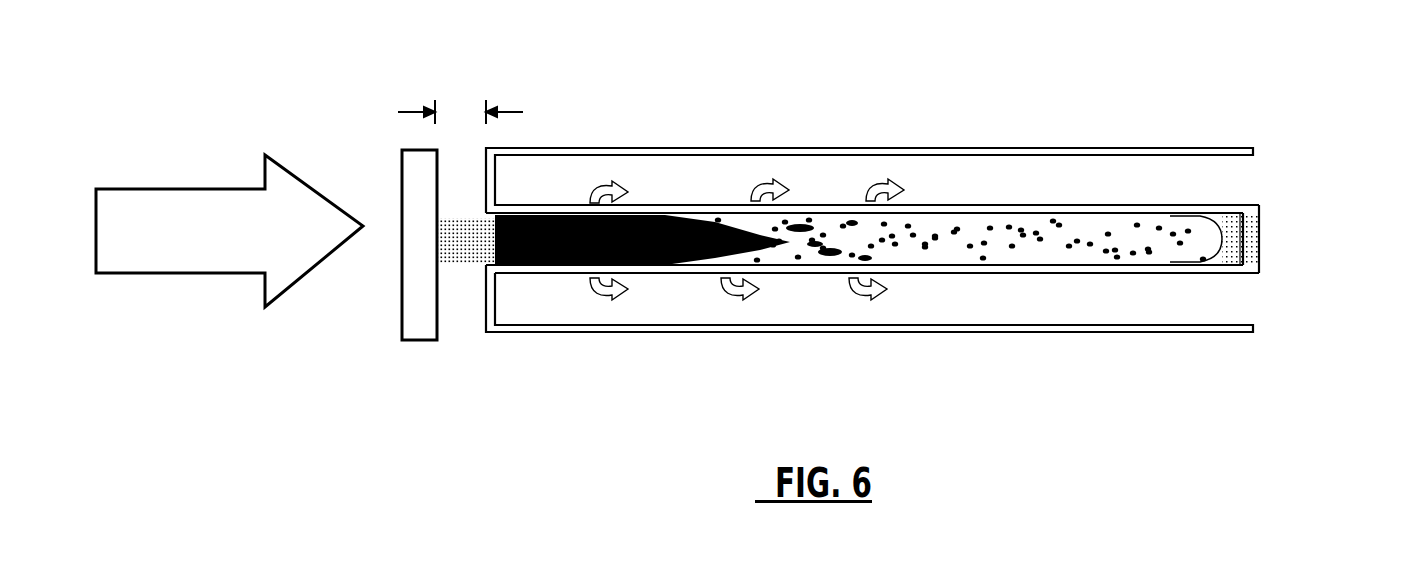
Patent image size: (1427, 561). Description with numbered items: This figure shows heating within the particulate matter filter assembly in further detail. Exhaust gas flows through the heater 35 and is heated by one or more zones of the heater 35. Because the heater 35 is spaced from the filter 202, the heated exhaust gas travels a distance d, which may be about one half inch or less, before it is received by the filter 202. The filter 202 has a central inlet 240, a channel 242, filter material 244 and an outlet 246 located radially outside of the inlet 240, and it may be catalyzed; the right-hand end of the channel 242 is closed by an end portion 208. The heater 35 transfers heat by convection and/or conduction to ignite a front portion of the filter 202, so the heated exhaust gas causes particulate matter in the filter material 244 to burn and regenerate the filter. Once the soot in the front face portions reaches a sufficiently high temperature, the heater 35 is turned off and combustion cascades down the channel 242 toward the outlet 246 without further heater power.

The heater 35 is at (205, 273).
The filter 202 is at (773, 147).
The end cap 208 is at (1290, 227).
The central inlet 240 is at (472, 276).
The channel 242 is at (872, 170).
The filter material 244 is at (922, 206).
The outlet 246 is at (1258, 182).